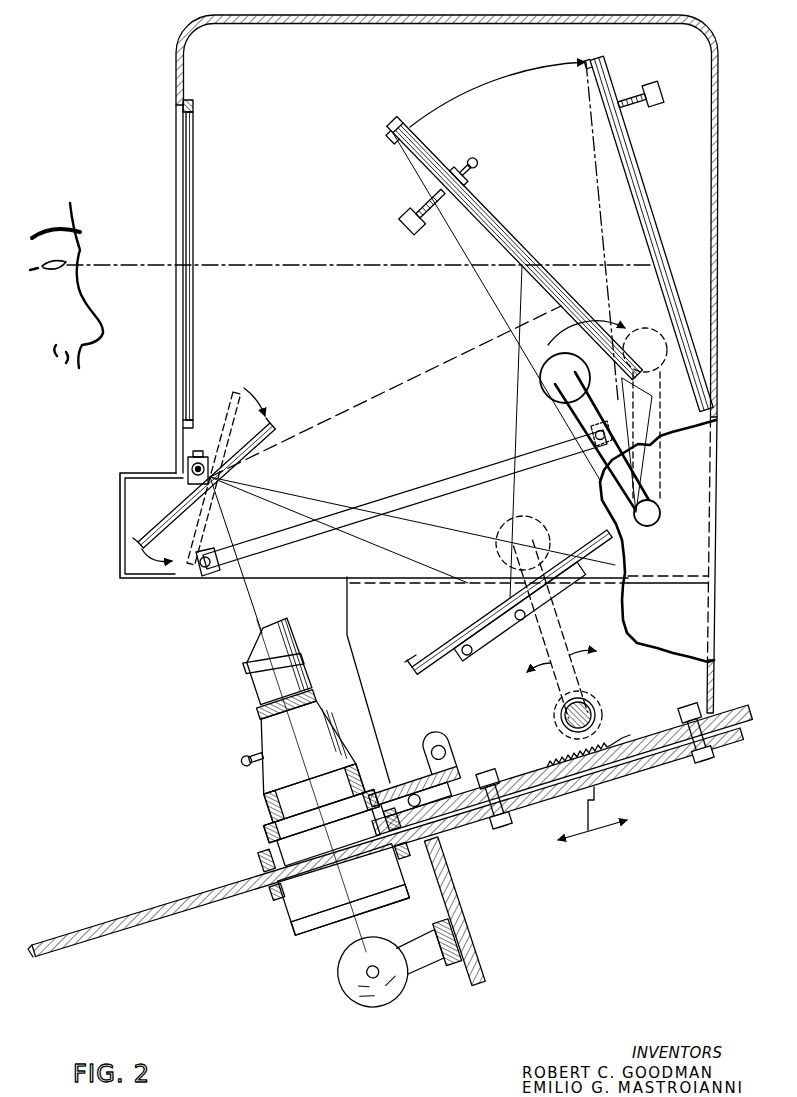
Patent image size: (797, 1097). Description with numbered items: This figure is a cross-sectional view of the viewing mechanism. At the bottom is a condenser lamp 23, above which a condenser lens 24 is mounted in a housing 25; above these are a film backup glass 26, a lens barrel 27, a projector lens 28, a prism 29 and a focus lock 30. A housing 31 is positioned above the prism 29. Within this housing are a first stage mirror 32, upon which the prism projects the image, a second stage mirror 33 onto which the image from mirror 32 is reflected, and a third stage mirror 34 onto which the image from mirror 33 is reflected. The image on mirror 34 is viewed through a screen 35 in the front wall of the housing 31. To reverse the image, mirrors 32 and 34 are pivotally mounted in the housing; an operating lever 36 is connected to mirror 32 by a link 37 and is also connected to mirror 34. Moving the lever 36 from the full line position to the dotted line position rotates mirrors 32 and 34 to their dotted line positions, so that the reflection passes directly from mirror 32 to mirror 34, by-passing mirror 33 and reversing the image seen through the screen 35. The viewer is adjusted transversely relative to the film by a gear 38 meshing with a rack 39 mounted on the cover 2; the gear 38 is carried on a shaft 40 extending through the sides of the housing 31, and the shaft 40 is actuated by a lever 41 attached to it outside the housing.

The cover 2 is at (112, 936).
The condenser lamp 23 is at (346, 982).
The condenser lens 24 is at (318, 943).
The housing 25 is at (290, 912).
The film backup glass 26 is at (262, 865).
The lens barrel 27 is at (265, 780).
The projector lens 28 is at (262, 712).
The prism 29 is at (298, 604).
The focus lock 30 is at (248, 760).
The housing 31 is at (176, 45).
The first stage mirror 32 is at (176, 510).
The second stage mirror 33 is at (443, 648).
The third stage mirror 34 is at (502, 236).
The screen 35 is at (186, 172).
The operating lever 36 is at (545, 386).
The link 37 is at (437, 480).
The gear 38 is at (598, 708).
The rack 39 is at (605, 740).
The shaft 40 is at (565, 716).
The lever 41 is at (560, 645).